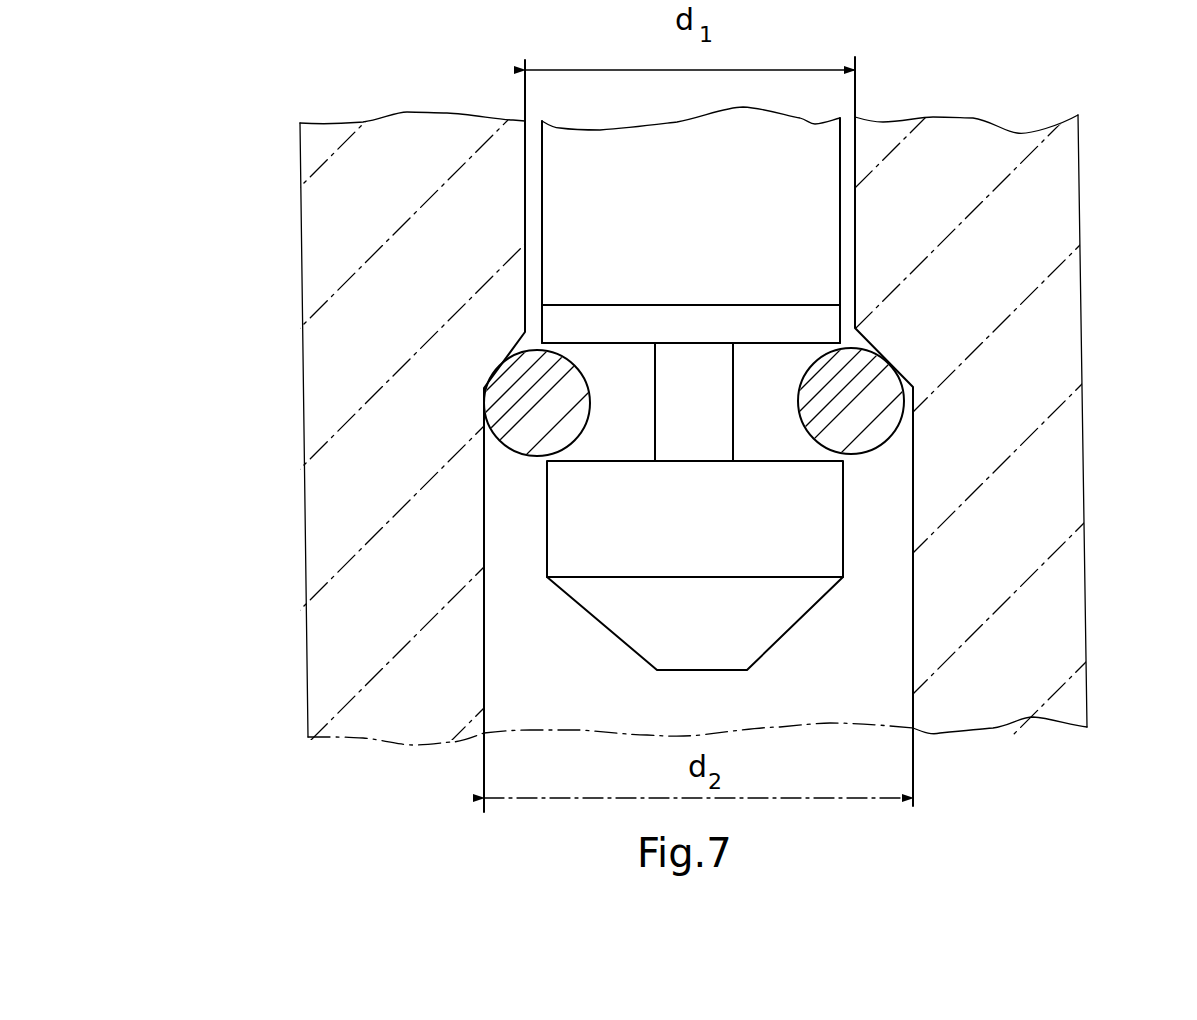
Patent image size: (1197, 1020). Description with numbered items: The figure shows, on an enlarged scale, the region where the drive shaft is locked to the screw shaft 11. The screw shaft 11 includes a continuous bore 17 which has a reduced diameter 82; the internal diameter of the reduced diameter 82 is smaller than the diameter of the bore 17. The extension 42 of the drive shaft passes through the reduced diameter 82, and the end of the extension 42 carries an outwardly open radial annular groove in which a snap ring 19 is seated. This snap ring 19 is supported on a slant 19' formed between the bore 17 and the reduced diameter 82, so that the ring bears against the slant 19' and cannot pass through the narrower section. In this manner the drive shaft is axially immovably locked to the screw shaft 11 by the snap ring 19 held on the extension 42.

The screw shaft 11 is at (348, 628).
The bore 17 is at (555, 702).
The snap ring 19 is at (588, 380).
The slant 19' is at (428, 380).
The extension 42 is at (730, 240).
The reduced diameter 82 is at (843, 150).